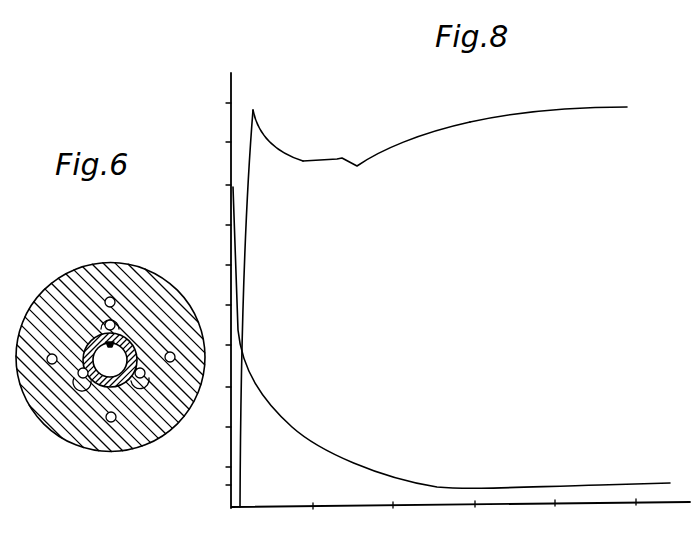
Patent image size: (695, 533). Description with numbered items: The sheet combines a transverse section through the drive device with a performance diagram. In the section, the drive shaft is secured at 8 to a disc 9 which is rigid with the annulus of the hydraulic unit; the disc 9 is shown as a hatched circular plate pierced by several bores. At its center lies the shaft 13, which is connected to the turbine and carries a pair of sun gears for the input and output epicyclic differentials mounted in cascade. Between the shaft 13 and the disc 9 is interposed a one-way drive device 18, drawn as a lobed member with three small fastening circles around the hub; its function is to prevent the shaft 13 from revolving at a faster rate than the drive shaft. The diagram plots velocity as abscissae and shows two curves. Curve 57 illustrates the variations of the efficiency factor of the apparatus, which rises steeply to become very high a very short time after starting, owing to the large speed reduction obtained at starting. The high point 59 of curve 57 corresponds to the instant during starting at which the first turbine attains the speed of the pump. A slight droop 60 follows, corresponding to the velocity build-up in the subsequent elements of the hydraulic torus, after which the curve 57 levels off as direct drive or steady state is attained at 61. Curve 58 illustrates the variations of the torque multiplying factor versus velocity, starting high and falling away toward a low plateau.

In FIG. 6, the securing point 8 is at (108, 423).
In FIG. 6, the disc 9 is at (155, 424).
In FIG. 6, the shaft 13 is at (103, 343).
In FIG. 6, the one-way drive device 18 is at (111, 323).
In FIG. 8, the curve 57 is at (245, 237).
In FIG. 8, the curve 58 is at (293, 427).
In FIG. 8, the high point 59 is at (269, 116).
In FIG. 8, the slight droop 60 is at (386, 144).
In FIG. 8, the direct drive or steady state 61 is at (628, 107).